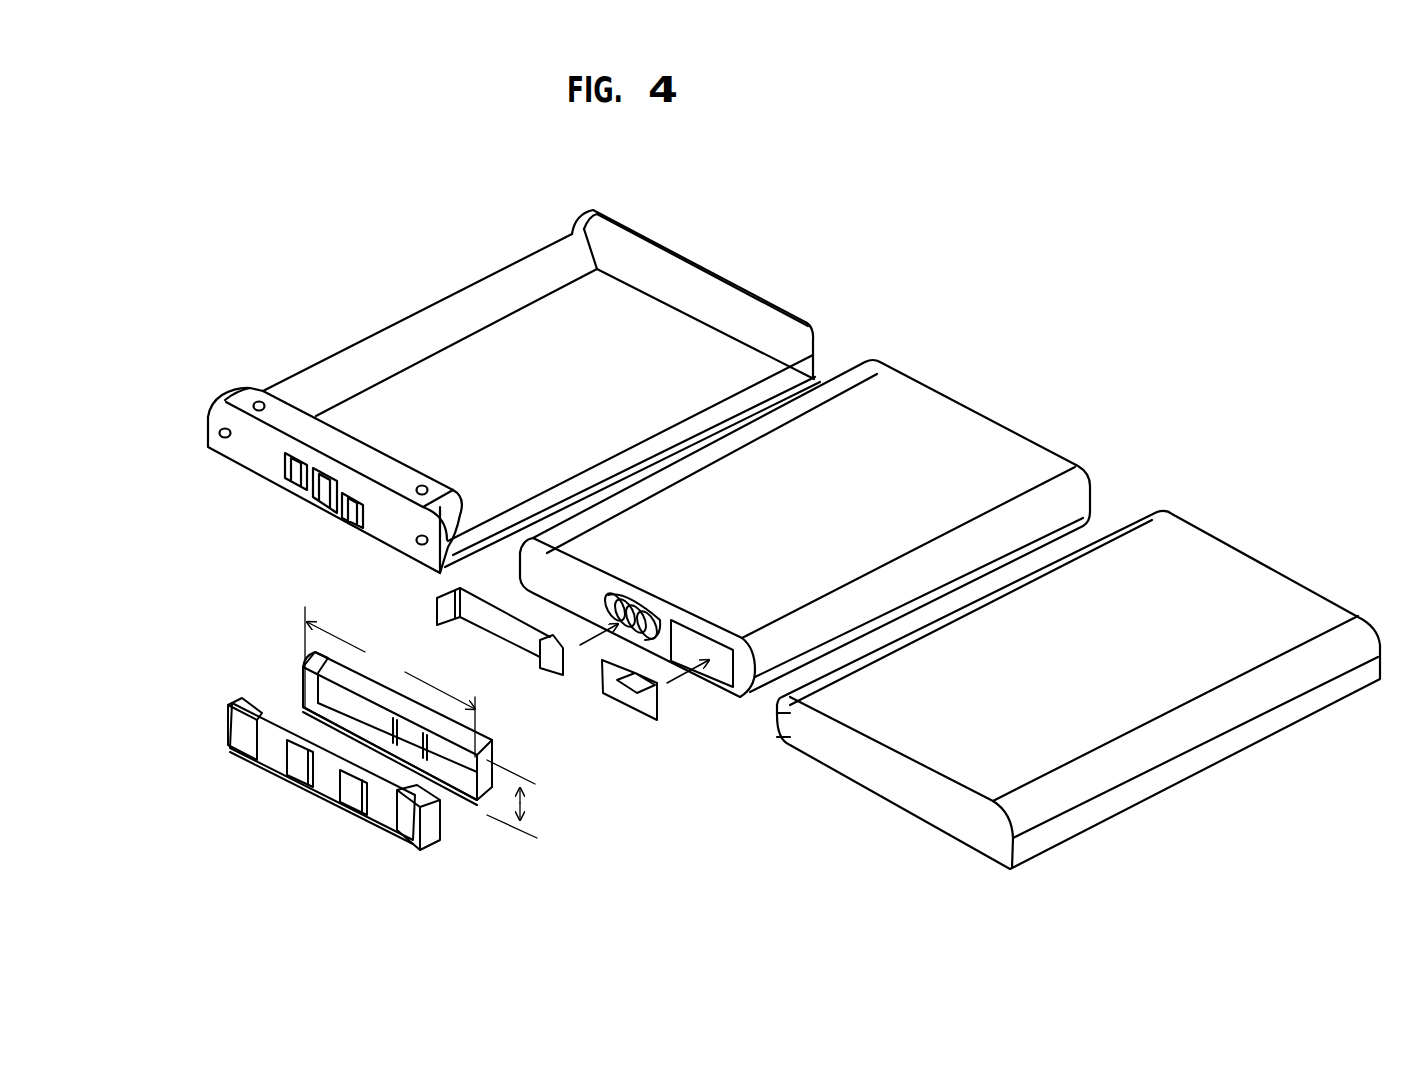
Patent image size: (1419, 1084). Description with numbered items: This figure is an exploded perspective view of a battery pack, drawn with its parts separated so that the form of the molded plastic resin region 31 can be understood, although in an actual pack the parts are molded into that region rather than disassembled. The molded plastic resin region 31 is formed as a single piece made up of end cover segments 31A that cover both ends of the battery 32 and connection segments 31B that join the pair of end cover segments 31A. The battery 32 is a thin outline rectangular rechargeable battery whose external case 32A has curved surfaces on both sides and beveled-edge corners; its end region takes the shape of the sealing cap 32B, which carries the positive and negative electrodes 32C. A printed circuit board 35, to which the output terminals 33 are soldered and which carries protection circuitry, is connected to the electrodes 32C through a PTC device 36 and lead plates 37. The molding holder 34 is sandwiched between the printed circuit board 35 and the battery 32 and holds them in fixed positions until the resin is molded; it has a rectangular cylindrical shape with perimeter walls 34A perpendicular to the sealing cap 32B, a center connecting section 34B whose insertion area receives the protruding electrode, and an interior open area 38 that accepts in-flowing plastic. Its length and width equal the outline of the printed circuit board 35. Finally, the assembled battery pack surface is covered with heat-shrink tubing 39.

The molded plastic resin region 31 is at (193, 434).
The end cover segment 31A is at (690, 262).
The connection segment 31B is at (417, 325).
The battery 32 is at (930, 354).
The external case 32A is at (850, 512).
The sealing cap 32B is at (577, 573).
The positive and negative electrodes 32C is at (643, 600).
The output terminals 33 is at (300, 770).
The molding holder 34 is at (495, 727).
The perimeter walls 34A is at (330, 712).
The center connecting section 34B is at (393, 728).
The printed circuit board 35 is at (387, 823).
The PTC device 36 is at (493, 623).
The lead plates 37 is at (228, 723).
The open area 38 is at (325, 717).
The tubing 39 is at (1218, 565).